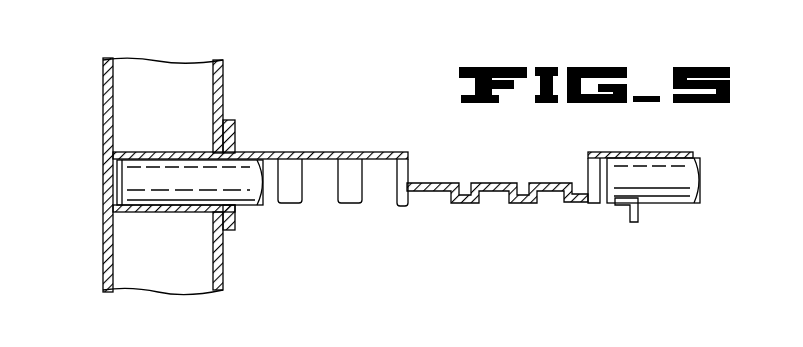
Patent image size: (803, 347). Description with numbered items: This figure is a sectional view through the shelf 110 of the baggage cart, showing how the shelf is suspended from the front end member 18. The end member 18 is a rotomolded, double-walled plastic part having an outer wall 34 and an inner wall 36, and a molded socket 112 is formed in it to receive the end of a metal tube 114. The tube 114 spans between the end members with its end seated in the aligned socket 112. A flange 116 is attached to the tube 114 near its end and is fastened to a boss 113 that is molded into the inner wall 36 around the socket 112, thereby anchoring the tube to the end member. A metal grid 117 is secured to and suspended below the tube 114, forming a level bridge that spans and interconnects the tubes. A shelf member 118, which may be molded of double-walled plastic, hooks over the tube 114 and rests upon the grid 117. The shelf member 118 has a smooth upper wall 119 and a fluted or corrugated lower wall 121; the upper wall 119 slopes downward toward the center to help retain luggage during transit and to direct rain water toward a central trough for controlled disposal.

The front end member 18 is at (226, 61).
The outer wall 34 is at (104, 100).
The inner wall 36 is at (222, 285).
The shelf 110 is at (500, 206).
The molded socket 112 is at (145, 193).
The boss 113 is at (223, 223).
The metal tube 114 is at (262, 202).
The flange 116 is at (236, 143).
The metal grid 117 is at (628, 218).
The shelf member 118 is at (327, 149).
The upper wall 119 is at (400, 153).
The lower wall 121 is at (536, 207).